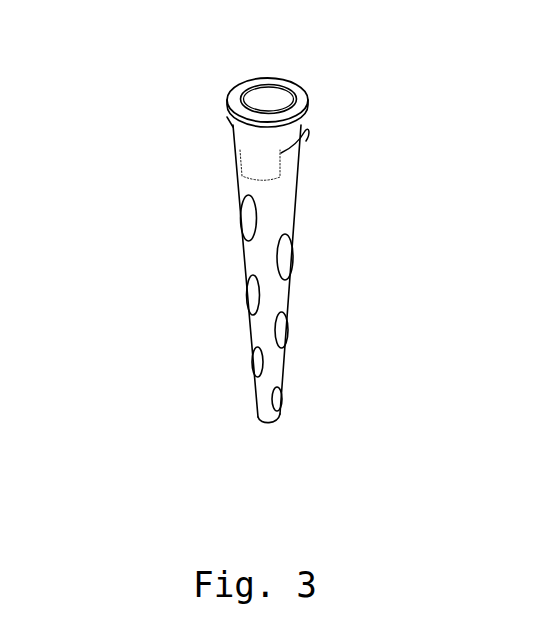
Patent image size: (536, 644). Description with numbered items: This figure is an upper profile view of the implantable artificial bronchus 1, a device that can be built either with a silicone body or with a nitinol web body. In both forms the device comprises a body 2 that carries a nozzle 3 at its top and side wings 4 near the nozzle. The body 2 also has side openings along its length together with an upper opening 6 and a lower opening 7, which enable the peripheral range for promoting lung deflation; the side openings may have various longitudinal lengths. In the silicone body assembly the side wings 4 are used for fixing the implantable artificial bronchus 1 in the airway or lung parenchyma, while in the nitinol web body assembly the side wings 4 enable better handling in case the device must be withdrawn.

The implantable artificial bronchus 1 is at (188, 132).
The body 2 is at (282, 195).
The nozzle 3 is at (303, 88).
The side wings 4 is at (307, 132).
The upper opening 6 is at (268, 100).
The lower opening 7 is at (265, 425).